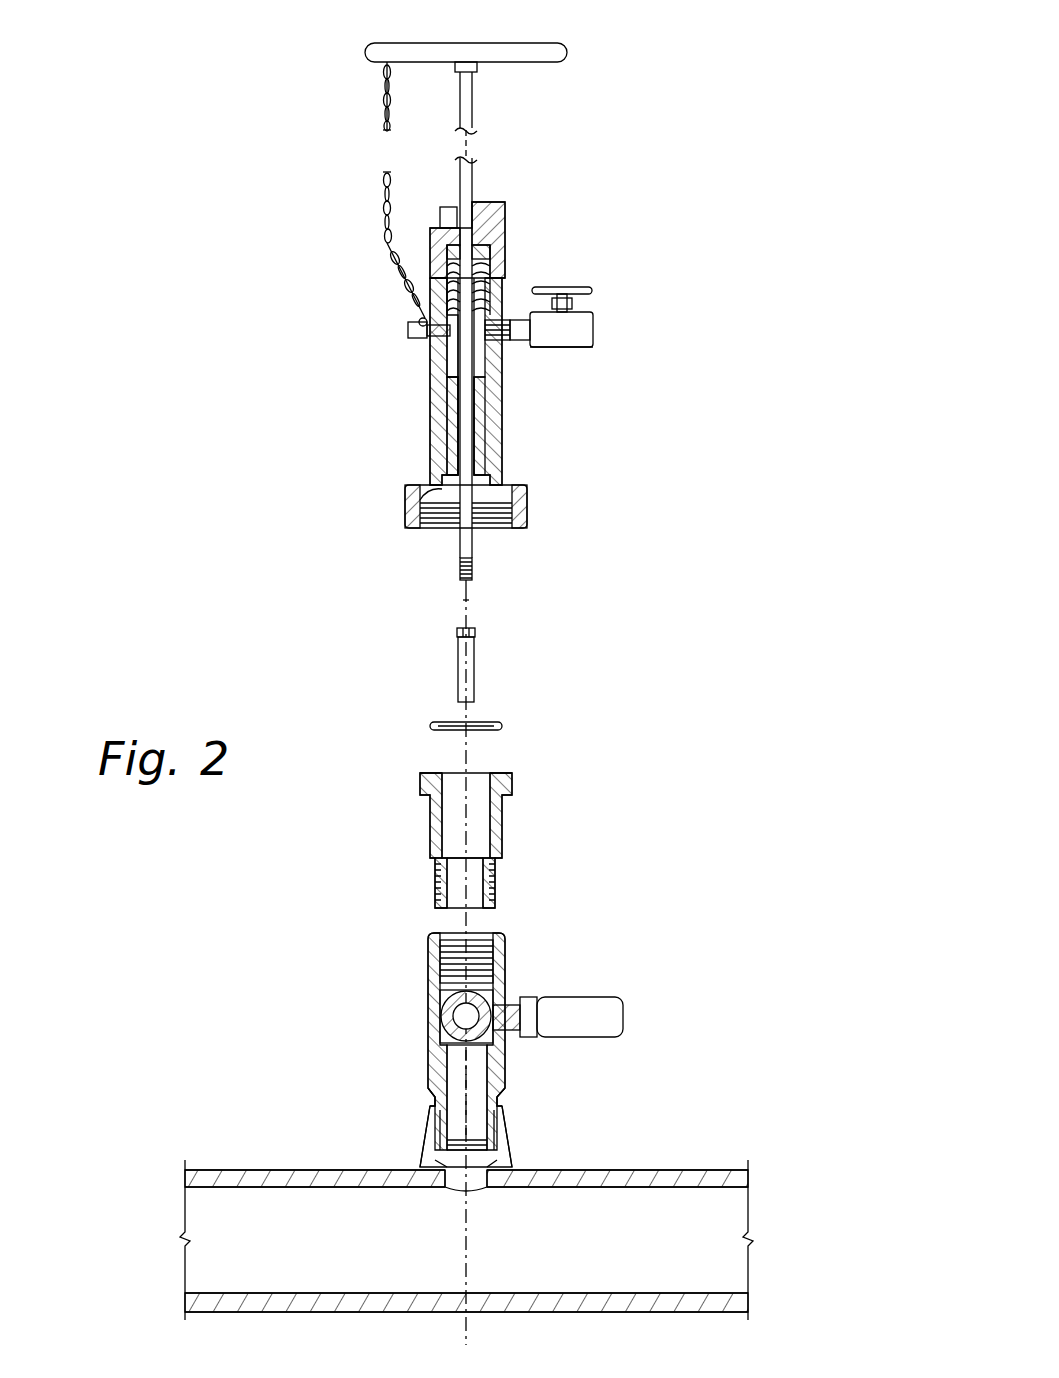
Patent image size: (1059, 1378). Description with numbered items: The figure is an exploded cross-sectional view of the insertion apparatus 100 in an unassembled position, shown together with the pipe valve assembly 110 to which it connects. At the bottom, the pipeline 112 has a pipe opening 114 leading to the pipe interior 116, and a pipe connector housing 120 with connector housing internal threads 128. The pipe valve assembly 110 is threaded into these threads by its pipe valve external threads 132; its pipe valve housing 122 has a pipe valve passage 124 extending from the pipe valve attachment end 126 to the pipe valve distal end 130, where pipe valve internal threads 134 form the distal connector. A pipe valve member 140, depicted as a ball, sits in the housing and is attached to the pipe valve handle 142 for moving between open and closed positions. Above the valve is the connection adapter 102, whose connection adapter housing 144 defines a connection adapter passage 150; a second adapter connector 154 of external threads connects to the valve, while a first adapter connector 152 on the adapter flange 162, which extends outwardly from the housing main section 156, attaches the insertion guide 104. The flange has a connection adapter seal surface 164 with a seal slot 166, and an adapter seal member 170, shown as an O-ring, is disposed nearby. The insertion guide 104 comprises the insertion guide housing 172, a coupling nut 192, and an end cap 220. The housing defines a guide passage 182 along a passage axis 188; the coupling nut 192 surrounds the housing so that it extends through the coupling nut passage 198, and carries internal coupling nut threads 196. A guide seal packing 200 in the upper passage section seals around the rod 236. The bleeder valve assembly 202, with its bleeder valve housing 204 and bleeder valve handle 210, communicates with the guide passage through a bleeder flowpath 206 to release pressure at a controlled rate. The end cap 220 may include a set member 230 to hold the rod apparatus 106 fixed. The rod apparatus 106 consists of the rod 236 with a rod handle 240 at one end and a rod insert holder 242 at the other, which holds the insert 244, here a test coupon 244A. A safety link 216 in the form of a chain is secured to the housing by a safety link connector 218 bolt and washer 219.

The insertion apparatus 100 is at (160, 120).
The connection adapter 102 is at (449, 818).
The insertion guide 104 is at (488, 385).
The rod apparatus 106 is at (451, 285).
The pipe valve assembly 110 is at (501, 1041).
The pipeline 112 is at (466, 1218).
The pipe opening 114 is at (445, 1200).
The pipe interior 116 is at (645, 1250).
The pipe connector housing 120 is at (505, 1150).
The pipe valve housing 122 is at (502, 1068).
The pipe valve passage 124 is at (478, 1082).
The pipe valve attachment end 126 is at (472, 1131).
The connector housing internal threads 128 is at (500, 1125).
The pipe valve distal end 130 is at (480, 1041).
The pipe valve external threads 132 is at (432, 1094).
The pipe valve internal threads 134 is at (480, 938).
The pipe valve member 140 is at (445, 1012).
The pipe valve handle 142 is at (623, 1018).
The connection adapter housing 144 is at (464, 818).
The connection adapter passage 150 is at (475, 885).
The first adapter connector 152 is at (425, 780).
The second adapter connector 154 is at (496, 900).
The housing main section 156 is at (502, 840).
The adapter flange 162 is at (505, 800).
The connection adapter seal surface 164 is at (508, 773).
The seal slot 166 is at (432, 772).
The adapter seal member 170 is at (502, 726).
The insertion guide housing 172 is at (505, 443).
The guide passage 182 is at (445, 418).
The passage axis 188 is at (465, 604).
The coupling nut 192 is at (495, 534).
The coupling nut threads 196 is at (483, 515).
The coupling nut passage 198 is at (437, 497).
The guide seal packing 200 is at (488, 270).
The bleeder valve assembly 202 is at (607, 319).
The bleeder valve housing 204 is at (583, 348).
The bleeder flowpath 206 is at (497, 345).
The bleeder valve handle 210 is at (580, 285).
The safety link 216 is at (384, 107).
The safety link connector 218 is at (420, 336).
The washer 219 is at (423, 318).
The end cap 220 is at (505, 220).
The set member 230 is at (447, 207).
The rod 236 is at (472, 100).
The rod handle 240 is at (567, 55).
The rod insert holder 242 is at (473, 572).
The insert 244 is at (462, 665).
The test coupon 244A is at (474, 665).